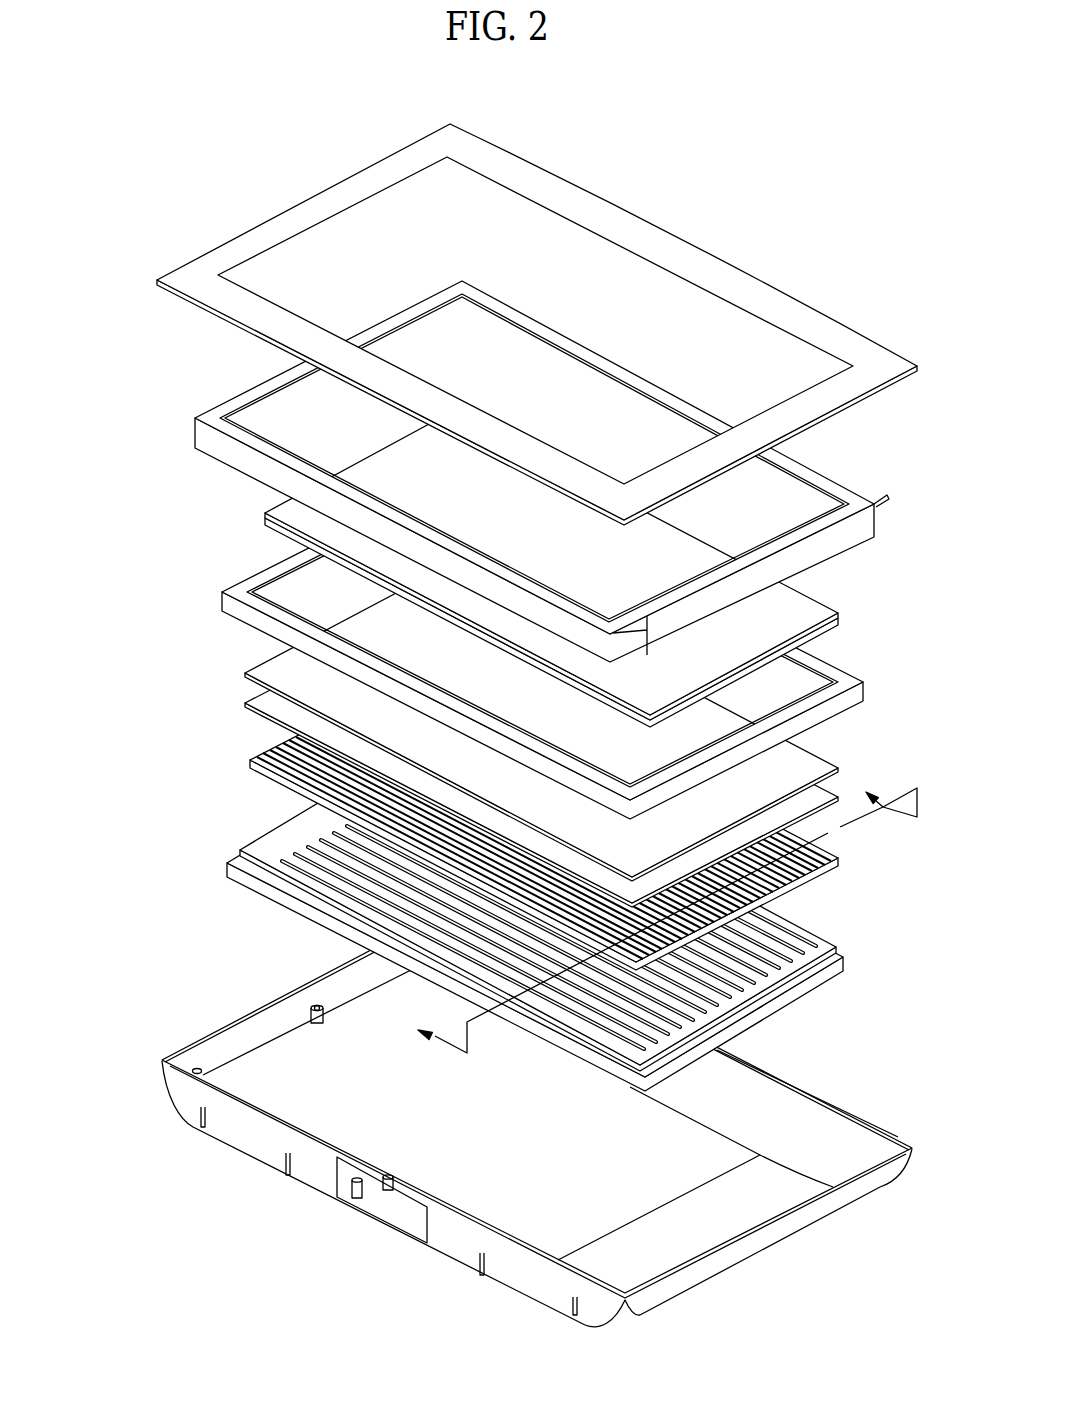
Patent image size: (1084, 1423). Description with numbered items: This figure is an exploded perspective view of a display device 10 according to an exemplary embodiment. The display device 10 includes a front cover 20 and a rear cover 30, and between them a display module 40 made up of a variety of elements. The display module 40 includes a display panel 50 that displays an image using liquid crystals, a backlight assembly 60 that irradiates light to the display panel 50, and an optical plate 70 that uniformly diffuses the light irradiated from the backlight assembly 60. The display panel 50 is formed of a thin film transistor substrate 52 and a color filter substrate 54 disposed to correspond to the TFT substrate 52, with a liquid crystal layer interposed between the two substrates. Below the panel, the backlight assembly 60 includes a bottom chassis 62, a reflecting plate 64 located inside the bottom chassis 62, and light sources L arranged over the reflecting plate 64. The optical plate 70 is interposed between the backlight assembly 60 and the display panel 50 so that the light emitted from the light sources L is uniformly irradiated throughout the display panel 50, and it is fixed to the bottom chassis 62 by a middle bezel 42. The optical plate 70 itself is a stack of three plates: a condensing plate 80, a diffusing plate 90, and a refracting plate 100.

The display device 10 is at (724, 136).
The front cover 20 is at (247, 207).
The rear cover 30 is at (148, 1060).
The display module 40 is at (117, 515).
The middle bezel 42 is at (222, 595).
The display panel 50 is at (181, 488).
The thin film transistor (TFT) substrate 52 is at (262, 521).
The color filter substrate 54 is at (262, 513).
The backlight assembly 60 is at (181, 813).
The bottom chassis 62 is at (247, 890).
The reflecting plate 64 is at (241, 850).
The light sources L is at (300, 838).
The optical plate 70 is at (181, 668).
The condensing plate 80 is at (244, 674).
The diffusing plate 90 is at (244, 704).
The refracting plate 100 is at (249, 761).